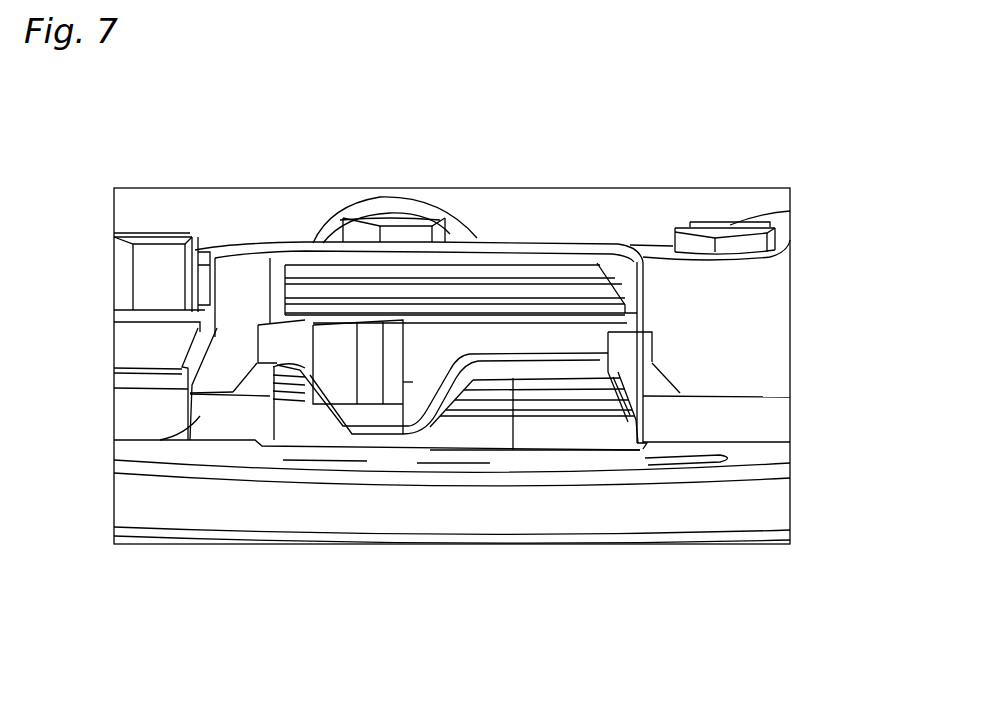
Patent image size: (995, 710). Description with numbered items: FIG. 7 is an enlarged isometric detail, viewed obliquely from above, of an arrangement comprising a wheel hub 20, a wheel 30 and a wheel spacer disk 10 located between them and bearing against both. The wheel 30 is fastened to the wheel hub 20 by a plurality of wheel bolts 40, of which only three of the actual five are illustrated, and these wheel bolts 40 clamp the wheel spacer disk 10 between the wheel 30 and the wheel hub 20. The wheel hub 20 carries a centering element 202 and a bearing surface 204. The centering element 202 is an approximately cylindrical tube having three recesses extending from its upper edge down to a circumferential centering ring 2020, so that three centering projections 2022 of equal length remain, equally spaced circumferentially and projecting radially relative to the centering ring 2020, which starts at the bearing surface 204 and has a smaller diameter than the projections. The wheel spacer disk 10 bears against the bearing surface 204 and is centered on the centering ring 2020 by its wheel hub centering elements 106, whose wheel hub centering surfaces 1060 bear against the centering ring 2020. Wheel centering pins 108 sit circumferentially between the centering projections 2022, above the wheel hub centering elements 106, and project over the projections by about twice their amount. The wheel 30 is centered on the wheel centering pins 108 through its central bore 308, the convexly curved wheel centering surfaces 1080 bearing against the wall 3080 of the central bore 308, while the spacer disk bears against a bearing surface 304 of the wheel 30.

The wheel spacer disk 10 is at (160, 440).
The wheel hub 20 is at (280, 510).
The wheel 30 is at (743, 285).
The wheel bolts 40 is at (147, 345).
The wheel hub centering elements 106 is at (650, 426).
The wheel centering pins 108 is at (623, 357).
The wheel hub centering surfaces 1060 is at (631, 426).
The wheel centering surfaces 1080 is at (647, 353).
The centering element 202 is at (650, 457).
The centering ring 2020 is at (383, 447).
The centering projections 2022 is at (480, 382).
The bearing surface 204 is at (475, 462).
The arm 304 is at (217, 398).
The central bore 308 is at (252, 307).
The wall 3080 is at (534, 327).